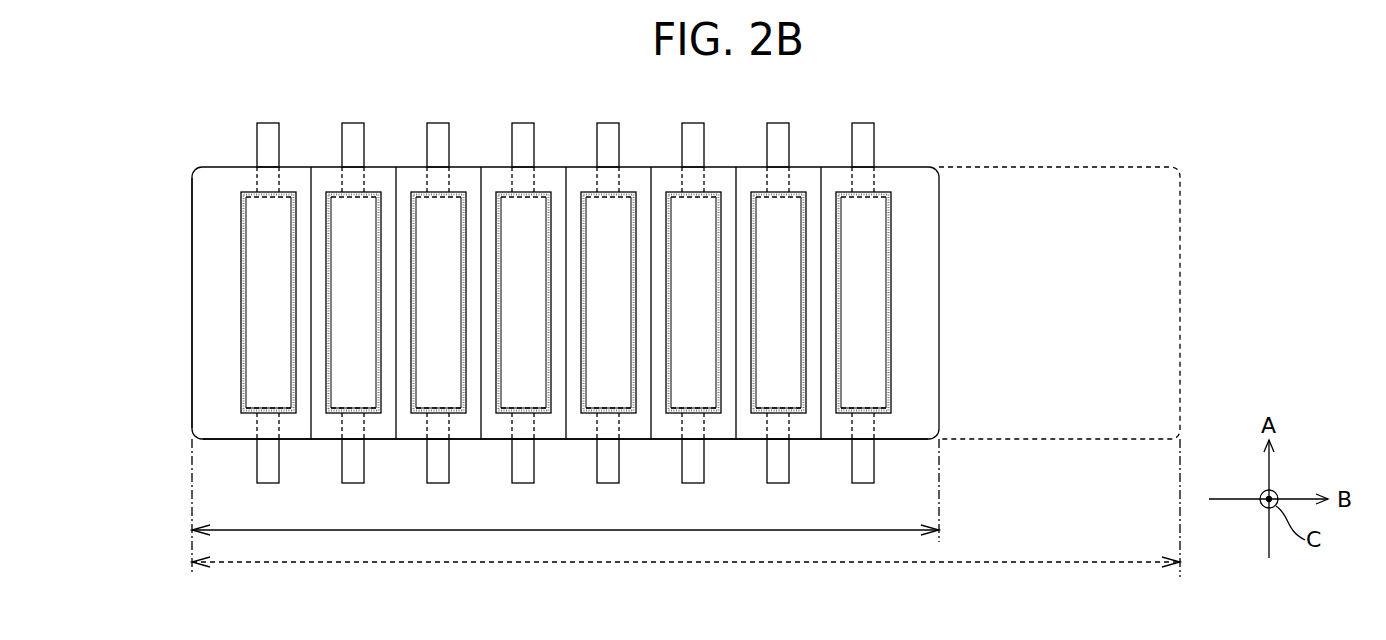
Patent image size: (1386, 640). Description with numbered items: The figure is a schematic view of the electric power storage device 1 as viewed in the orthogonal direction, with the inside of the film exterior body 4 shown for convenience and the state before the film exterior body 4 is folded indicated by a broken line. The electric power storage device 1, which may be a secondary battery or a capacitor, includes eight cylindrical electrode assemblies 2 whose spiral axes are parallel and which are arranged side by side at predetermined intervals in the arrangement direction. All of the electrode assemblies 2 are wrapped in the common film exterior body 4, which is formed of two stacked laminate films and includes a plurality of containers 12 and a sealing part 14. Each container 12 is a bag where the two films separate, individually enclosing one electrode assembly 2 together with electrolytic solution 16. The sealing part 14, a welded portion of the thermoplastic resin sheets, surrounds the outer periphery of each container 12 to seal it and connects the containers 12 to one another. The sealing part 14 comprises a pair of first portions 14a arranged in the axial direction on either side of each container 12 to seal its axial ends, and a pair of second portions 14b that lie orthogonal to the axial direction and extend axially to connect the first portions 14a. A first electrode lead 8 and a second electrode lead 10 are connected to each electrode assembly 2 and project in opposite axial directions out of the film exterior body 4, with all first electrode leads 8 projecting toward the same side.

The electric power storage device 1 is at (578, 612).
The electrode assembly 2 is at (257, 258).
The film exterior body 4 is at (140, 325).
The first electrode lead 8 is at (279, 140).
The second electrode lead 10 is at (279, 463).
The container 12 is at (240, 413).
The sealing part 14 is at (205, 338).
The first portion 14a is at (457, 180).
The second portion 14b is at (403, 262).
The electrolytic solution 16 is at (243, 213).